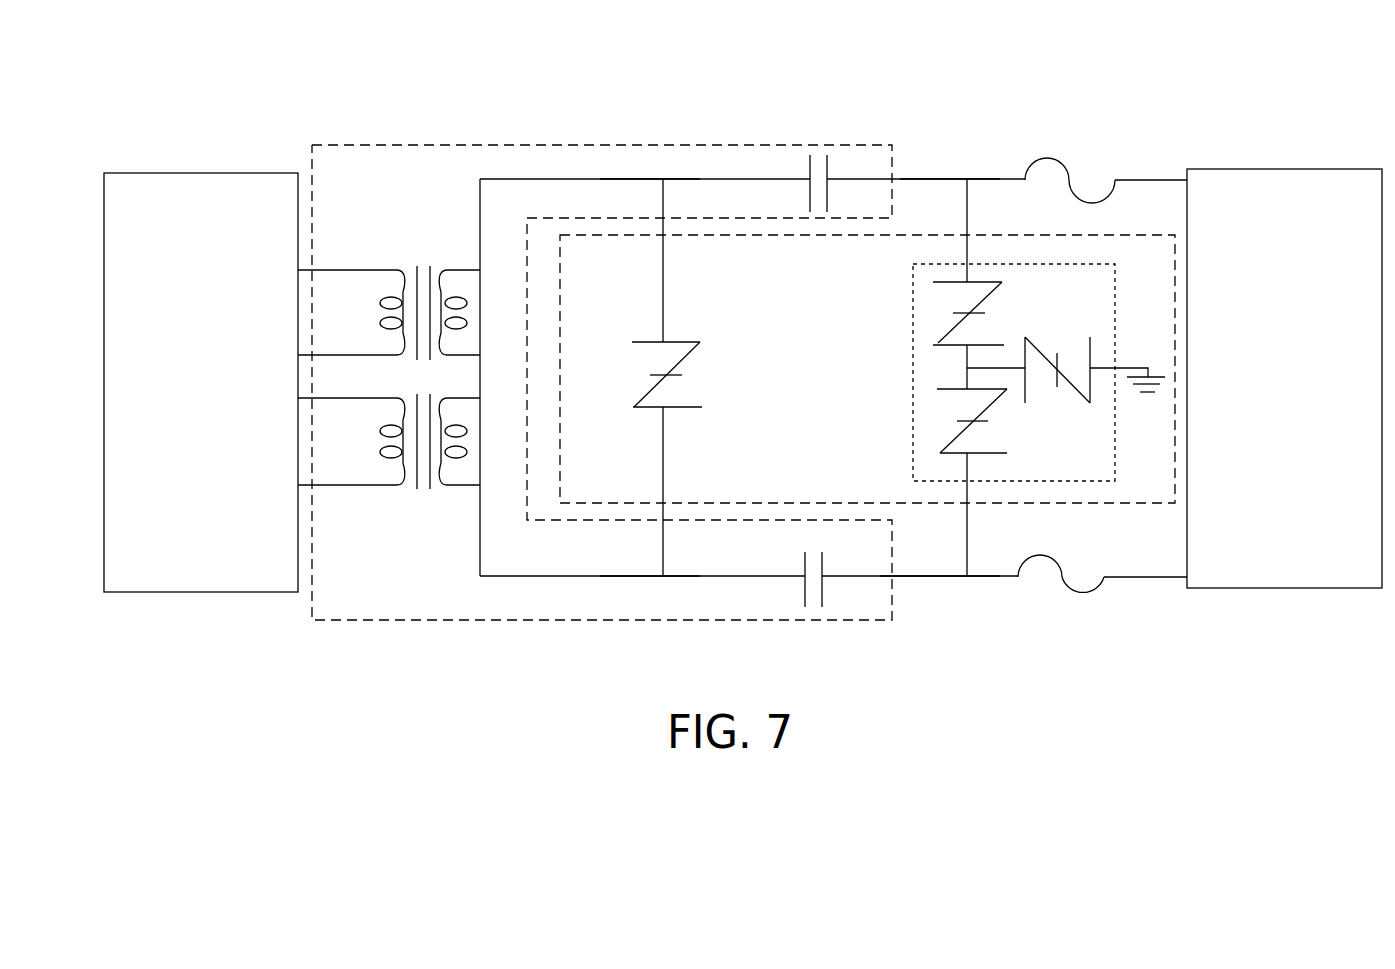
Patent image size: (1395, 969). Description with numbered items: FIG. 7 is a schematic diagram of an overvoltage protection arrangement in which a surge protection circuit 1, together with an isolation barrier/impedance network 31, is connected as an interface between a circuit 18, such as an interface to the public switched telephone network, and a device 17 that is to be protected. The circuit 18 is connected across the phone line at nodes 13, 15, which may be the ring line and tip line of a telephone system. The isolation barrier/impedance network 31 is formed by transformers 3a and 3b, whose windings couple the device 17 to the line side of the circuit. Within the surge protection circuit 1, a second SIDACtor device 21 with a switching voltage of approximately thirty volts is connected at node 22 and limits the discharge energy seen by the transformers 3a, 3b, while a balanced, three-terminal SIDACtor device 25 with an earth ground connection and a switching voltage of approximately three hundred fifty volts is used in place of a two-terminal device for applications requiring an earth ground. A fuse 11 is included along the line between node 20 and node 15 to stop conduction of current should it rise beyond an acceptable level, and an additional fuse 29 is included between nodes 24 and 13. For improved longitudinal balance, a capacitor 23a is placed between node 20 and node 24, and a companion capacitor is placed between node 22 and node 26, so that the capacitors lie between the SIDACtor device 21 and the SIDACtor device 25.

The surge protection circuit 1 is at (977, 222).
The transformer 3a is at (389, 261).
The transformer 3b is at (389, 491).
The fuse 11 is at (1085, 141).
The node 13 is at (1145, 624).
The node 15 is at (1159, 132).
The device 17 is at (201, 338).
The circuit 18 is at (1284, 330).
The node 20 is at (963, 182).
The second SIDACtor device 21 is at (709, 324).
The node 22 is at (652, 130).
The capacitor 23a is at (874, 148).
The node 24 is at (939, 627).
The balanced three-terminal SIDACtor device 25 is at (1039, 415).
The node 26 is at (711, 619).
The fuse 29 is at (1043, 620).
The isolation barrier/impedance network 31 is at (480, 138).